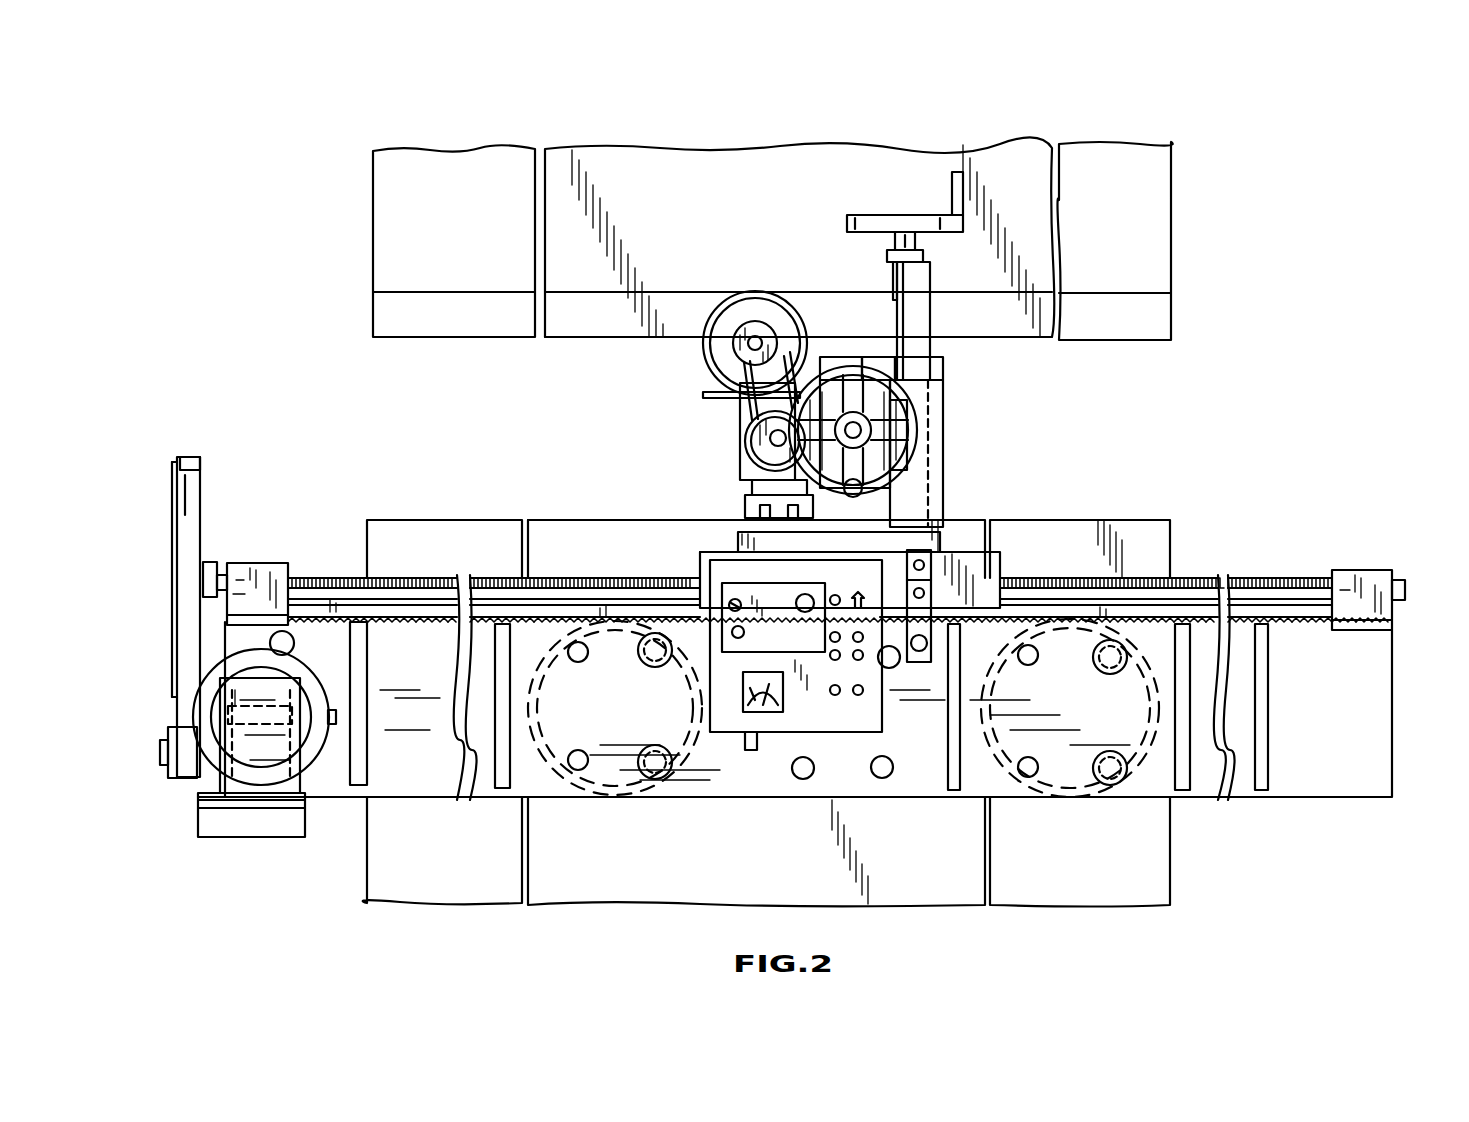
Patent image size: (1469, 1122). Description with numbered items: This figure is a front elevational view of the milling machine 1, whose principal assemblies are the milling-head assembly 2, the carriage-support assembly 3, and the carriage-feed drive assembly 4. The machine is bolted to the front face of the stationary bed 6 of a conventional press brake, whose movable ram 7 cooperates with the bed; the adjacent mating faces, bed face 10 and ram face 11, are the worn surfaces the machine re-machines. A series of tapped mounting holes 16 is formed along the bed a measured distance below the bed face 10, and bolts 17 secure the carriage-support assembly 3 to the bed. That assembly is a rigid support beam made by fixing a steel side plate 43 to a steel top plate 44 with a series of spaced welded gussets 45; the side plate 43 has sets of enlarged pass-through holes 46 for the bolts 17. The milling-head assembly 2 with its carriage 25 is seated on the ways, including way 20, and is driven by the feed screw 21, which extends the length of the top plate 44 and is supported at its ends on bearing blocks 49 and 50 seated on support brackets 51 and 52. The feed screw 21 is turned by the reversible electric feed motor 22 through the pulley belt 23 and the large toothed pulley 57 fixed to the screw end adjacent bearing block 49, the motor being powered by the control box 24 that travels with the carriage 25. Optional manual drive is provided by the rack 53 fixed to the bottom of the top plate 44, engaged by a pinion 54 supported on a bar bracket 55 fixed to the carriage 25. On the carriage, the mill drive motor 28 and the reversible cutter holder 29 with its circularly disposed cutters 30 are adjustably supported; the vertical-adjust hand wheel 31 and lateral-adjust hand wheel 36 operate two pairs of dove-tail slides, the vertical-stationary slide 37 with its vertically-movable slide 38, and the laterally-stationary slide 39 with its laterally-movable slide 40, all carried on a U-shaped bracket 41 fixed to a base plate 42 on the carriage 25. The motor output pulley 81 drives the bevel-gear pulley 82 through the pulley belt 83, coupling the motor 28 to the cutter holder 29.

The milling machine 1 is at (1104, 510).
The milling-head assembly 2 is at (960, 390).
The carriage-support assembly 3 is at (657, 228).
The carriage-feed drive assembly 4 is at (188, 797).
The stationary bed 6 is at (572, 530).
The movable ram 7 is at (572, 178).
The bed face 10 is at (540, 520).
The ram face 11 is at (553, 338).
The mounting holes 16 is at (812, 775).
The bolts 17 is at (652, 745).
The way 20 is at (347, 598).
The feed screw 21 is at (312, 578).
The electric feed motor 22 is at (253, 755).
The pulley belt 23 is at (193, 470).
The control box 24 is at (790, 718).
The carriage 25 is at (975, 562).
The mill drive motor 28 is at (752, 302).
The cutter holder 29 is at (752, 487).
The cutters 30 is at (745, 508).
The vertical-adjust hand wheel 31 is at (890, 215).
The lateral-adjust hand wheel 36 is at (940, 420).
The vertical-stationary slide 37 is at (925, 350).
The vertically-movable slide 38 is at (893, 350).
The laterally-stationary slide 39 is at (873, 358).
The laterally-movable slide 40 is at (828, 358).
The U-shaped bracket 41 is at (943, 490).
The base plate 42 is at (738, 540).
The side plate 43 is at (433, 775).
The top plate 44 is at (330, 612).
The gussets 45 is at (358, 775).
The pass-through holes 46 is at (578, 662).
The bearing block 49 is at (243, 568).
The bearing block 50 is at (1370, 572).
The support bracket 51 is at (243, 620).
The support bracket 52 is at (1372, 628).
The rack 53 is at (424, 622).
The pinion 54 is at (922, 665).
The bar bracket 55 is at (927, 583).
The large toothed pulley 57 is at (172, 515).
The motor output pulley 81 is at (745, 348).
The bevel-gear pulley 82 is at (752, 446).
The pulley belt 83 is at (735, 395).